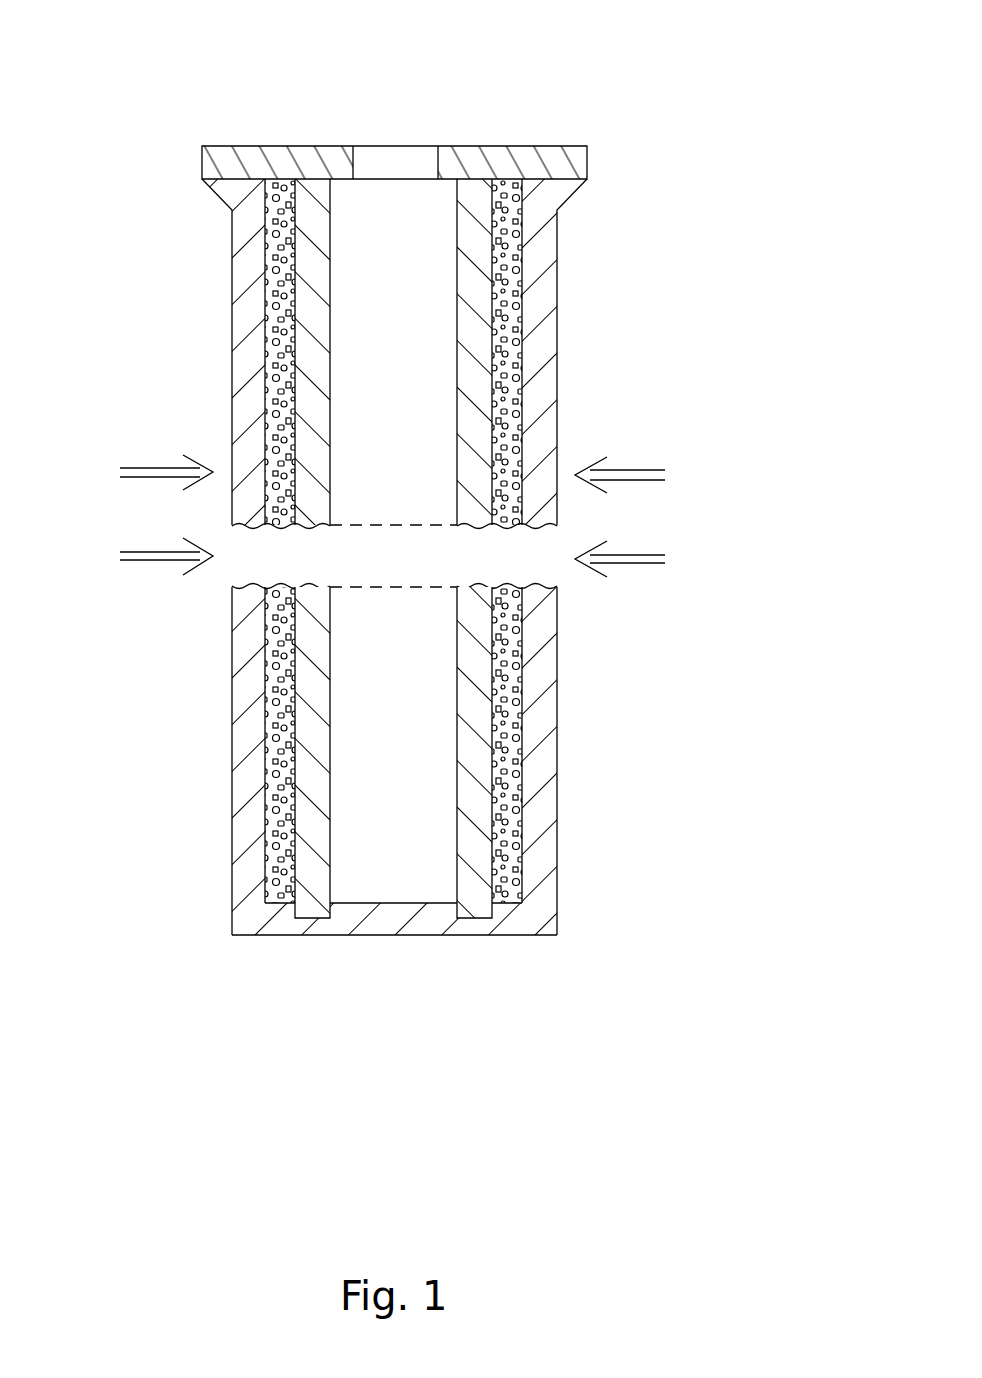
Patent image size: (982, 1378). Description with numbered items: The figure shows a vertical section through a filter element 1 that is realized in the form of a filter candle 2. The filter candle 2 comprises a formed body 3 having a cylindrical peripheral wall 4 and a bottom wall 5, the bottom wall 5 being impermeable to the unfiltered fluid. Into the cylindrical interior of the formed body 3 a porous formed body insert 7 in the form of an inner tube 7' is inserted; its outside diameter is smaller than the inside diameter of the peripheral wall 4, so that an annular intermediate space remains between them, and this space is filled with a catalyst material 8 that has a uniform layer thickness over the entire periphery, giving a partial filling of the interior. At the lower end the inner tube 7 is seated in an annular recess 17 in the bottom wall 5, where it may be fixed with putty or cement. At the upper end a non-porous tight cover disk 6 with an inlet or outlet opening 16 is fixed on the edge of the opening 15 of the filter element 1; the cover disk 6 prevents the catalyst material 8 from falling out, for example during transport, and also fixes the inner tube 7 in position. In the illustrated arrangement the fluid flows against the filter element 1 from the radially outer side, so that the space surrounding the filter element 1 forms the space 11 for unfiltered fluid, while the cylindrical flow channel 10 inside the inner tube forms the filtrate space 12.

The filter element 1 is at (668, 417).
The filter candle 2 is at (668, 417).
The formed body 3 is at (580, 290).
The cylindrical peripheral wall 4 is at (545, 788).
The bottom wall 5 is at (375, 918).
The cover disk 6 is at (533, 162).
The formed body insert 7 is at (281, 832).
The inner tube 7' is at (362, 628).
The catalyst material 8 is at (267, 747).
The flow channel 10 is at (418, 406).
The space for unfiltered fluid 11 is at (135, 347).
The filtrate space 12 is at (393, 248).
The opening 15 is at (241, 162).
The inlet or outlet opening 16 is at (392, 160).
The annular recess 17 is at (477, 917).